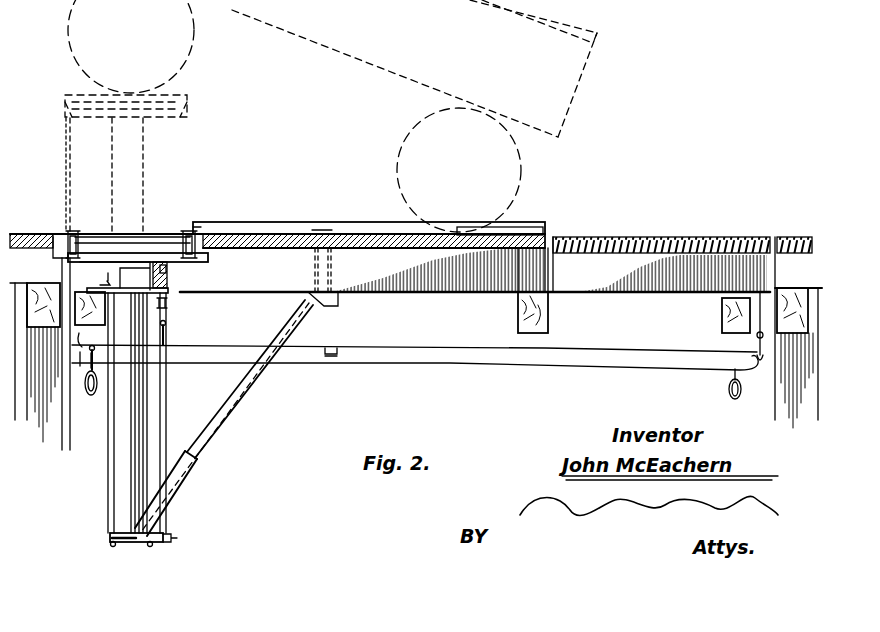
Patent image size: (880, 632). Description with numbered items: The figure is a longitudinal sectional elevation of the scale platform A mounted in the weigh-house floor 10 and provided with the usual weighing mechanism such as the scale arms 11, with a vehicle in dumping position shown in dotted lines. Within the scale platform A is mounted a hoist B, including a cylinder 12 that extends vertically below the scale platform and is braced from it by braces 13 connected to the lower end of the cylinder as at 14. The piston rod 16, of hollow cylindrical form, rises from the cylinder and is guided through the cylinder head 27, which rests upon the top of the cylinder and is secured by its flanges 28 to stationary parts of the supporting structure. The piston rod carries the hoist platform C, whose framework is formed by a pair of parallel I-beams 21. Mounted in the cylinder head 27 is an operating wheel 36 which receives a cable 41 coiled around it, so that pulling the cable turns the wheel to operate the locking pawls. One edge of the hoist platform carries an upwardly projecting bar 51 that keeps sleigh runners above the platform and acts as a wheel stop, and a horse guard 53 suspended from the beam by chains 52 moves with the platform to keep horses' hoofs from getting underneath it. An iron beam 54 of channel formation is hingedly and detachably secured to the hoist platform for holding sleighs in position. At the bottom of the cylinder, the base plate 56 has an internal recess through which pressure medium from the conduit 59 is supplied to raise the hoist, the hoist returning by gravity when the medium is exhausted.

The weigh-house floor 10 is at (30, 232).
The I-beams 21 is at (53, 236).
The cylinder head 27 is at (125, 270).
The flanges 28 is at (93, 276).
The operating wheel 36 is at (170, 272).
The cable 41 is at (175, 293).
The chains 52 is at (66, 134).
The horse guard 53 is at (72, 192).
The bar 51 is at (80, 206).
The piston rod 16 is at (144, 190).
The iron beam 54 is at (345, 228).
The scale arms 11 is at (386, 352).
The cylinder 12 is at (127, 430).
The braces 13 is at (226, 410).
The connection of braces to cylinder 14 is at (122, 547).
The base plate 56 is at (120, 533).
The conduit 59 is at (157, 528).
The scale platform A is at (272, 235).
The hoist B is at (130, 336).
The hoist platform C is at (158, 235).